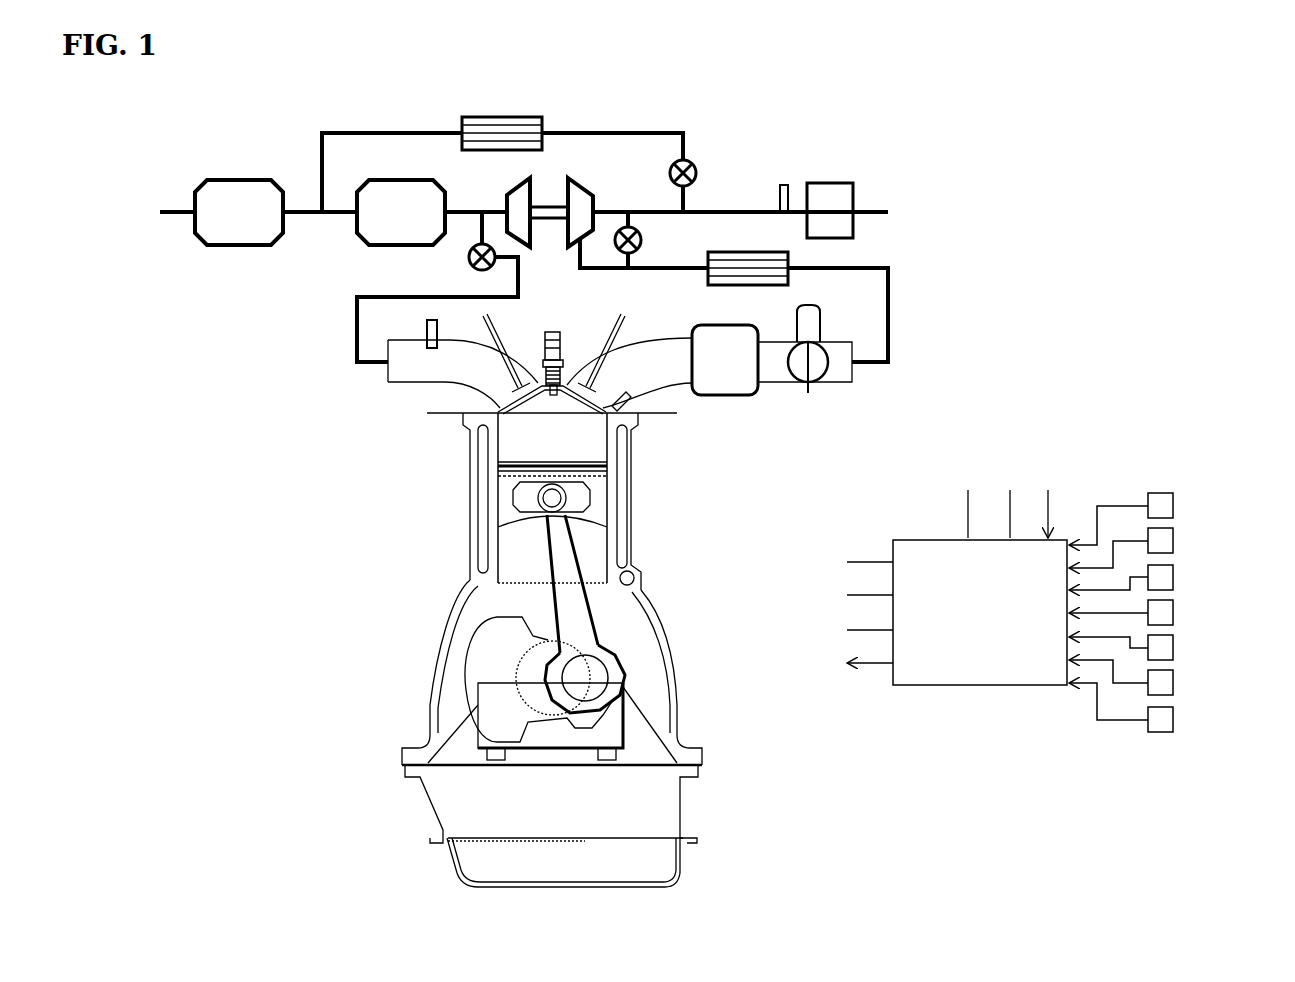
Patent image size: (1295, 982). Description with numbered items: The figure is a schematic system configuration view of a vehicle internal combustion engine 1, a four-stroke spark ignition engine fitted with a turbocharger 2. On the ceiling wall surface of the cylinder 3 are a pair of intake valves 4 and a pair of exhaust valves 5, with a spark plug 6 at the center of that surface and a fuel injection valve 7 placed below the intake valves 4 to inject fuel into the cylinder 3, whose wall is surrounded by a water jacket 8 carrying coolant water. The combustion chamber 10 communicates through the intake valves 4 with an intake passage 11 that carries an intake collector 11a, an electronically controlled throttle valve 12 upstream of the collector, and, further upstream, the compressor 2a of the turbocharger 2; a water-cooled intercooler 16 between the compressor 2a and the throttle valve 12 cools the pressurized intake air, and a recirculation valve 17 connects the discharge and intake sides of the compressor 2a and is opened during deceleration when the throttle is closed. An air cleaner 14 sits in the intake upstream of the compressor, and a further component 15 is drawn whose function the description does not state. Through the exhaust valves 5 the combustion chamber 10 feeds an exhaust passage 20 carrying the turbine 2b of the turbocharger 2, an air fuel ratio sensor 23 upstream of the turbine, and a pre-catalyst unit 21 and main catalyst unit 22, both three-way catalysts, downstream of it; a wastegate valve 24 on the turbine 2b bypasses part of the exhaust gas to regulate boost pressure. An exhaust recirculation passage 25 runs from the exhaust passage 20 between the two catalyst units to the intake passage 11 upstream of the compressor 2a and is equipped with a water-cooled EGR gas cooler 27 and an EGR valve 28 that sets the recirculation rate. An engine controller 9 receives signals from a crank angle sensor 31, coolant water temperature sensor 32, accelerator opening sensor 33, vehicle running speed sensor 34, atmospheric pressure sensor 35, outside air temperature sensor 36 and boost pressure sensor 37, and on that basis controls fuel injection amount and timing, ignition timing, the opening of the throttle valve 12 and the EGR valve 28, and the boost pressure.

The internal combustion engine 1 is at (455, 528).
The turbocharger 2 is at (549, 175).
The compressor 2a is at (593, 200).
The turbine 2b is at (510, 190).
The cylinder 3 is at (500, 448).
The intake valves 4 is at (578, 383).
The exhaust valves 5 is at (493, 393).
The spark plug 6 is at (550, 325).
The fuel injection valve 7 is at (625, 398).
The water jacket 8 is at (617, 512).
The engine controller 9 is at (968, 657).
The combustion chamber 10 is at (467, 427).
The intake passage 11 is at (888, 313).
The intake collector 11a is at (728, 368).
The throttle valve 12 is at (817, 367).
The air cleaner 14 is at (788, 185).
The muffler 15 is at (855, 198).
The intercooler 16 is at (790, 258).
The recirculation valve 17 is at (643, 240).
The exhaust passage 20 is at (347, 330).
The pre-catalyst unit 21 is at (372, 228).
The main catalyst unit 22 is at (240, 228).
The air fuel ratio sensor 23 is at (425, 328).
The wastegate valve 24 is at (468, 258).
The exhaust recirculation passage 25 is at (397, 133).
The EGR gas cooler 27 is at (542, 123).
The EGR valve 28 is at (695, 163).
The crank angle sensor 31 is at (1175, 506).
The coolant water temperature sensor 32 is at (1175, 541).
The accelerator opening sensor 33 is at (1175, 577).
The vehicle running speed sensor 34 is at (1175, 613).
The atmospheric pressure sensor 35 is at (1175, 648).
The outside air temperature sensor 36 is at (1175, 683).
The boost pressure sensor 37 is at (1175, 720).